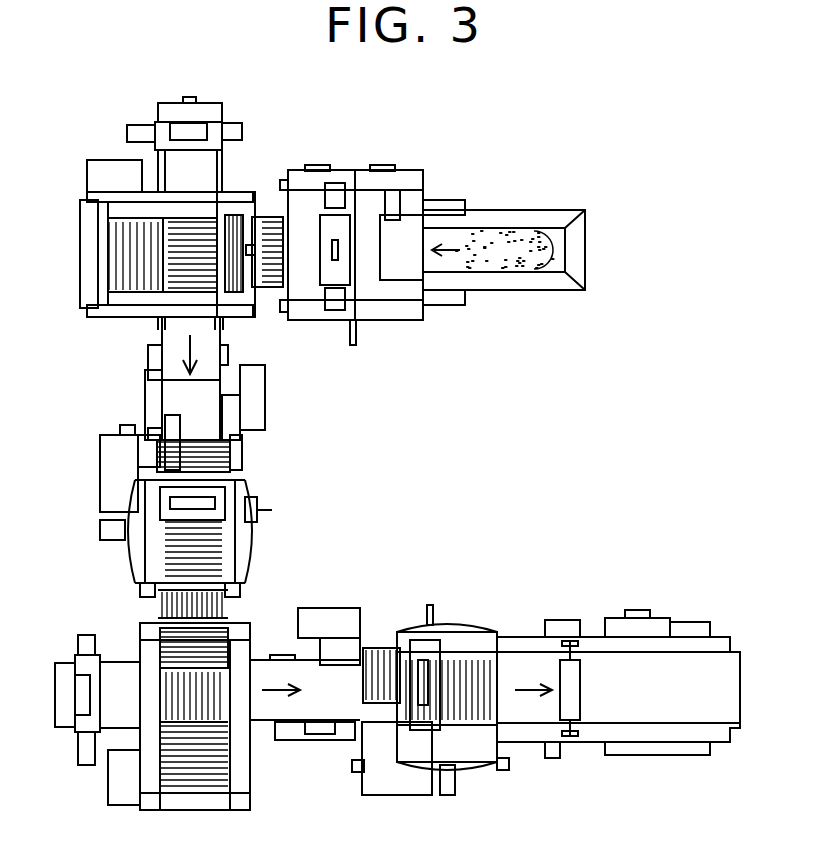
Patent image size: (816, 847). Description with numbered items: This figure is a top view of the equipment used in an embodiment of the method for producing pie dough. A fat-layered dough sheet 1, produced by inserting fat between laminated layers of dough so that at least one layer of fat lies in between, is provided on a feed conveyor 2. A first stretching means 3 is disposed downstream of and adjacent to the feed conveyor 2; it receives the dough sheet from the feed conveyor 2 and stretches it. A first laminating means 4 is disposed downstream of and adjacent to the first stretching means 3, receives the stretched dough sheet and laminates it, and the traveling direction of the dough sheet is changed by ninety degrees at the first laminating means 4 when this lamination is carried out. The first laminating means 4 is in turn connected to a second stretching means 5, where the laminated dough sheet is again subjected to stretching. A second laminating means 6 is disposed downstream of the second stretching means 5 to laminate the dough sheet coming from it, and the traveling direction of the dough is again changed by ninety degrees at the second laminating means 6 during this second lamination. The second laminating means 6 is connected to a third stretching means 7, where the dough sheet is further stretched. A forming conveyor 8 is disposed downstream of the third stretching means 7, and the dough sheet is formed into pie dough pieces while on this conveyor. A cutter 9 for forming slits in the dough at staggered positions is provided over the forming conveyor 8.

The fat-layered dough sheet 1 is at (525, 235).
The feed conveyor 2 is at (490, 210).
The first stretching means 3 is at (350, 170).
The first laminating means 4 is at (232, 192).
The second stretching means 5 is at (100, 475).
The second laminating means 6 is at (140, 655).
The third stretching means 7 is at (478, 776).
The forming conveyor 8 is at (533, 745).
The cutter 9 is at (585, 702).